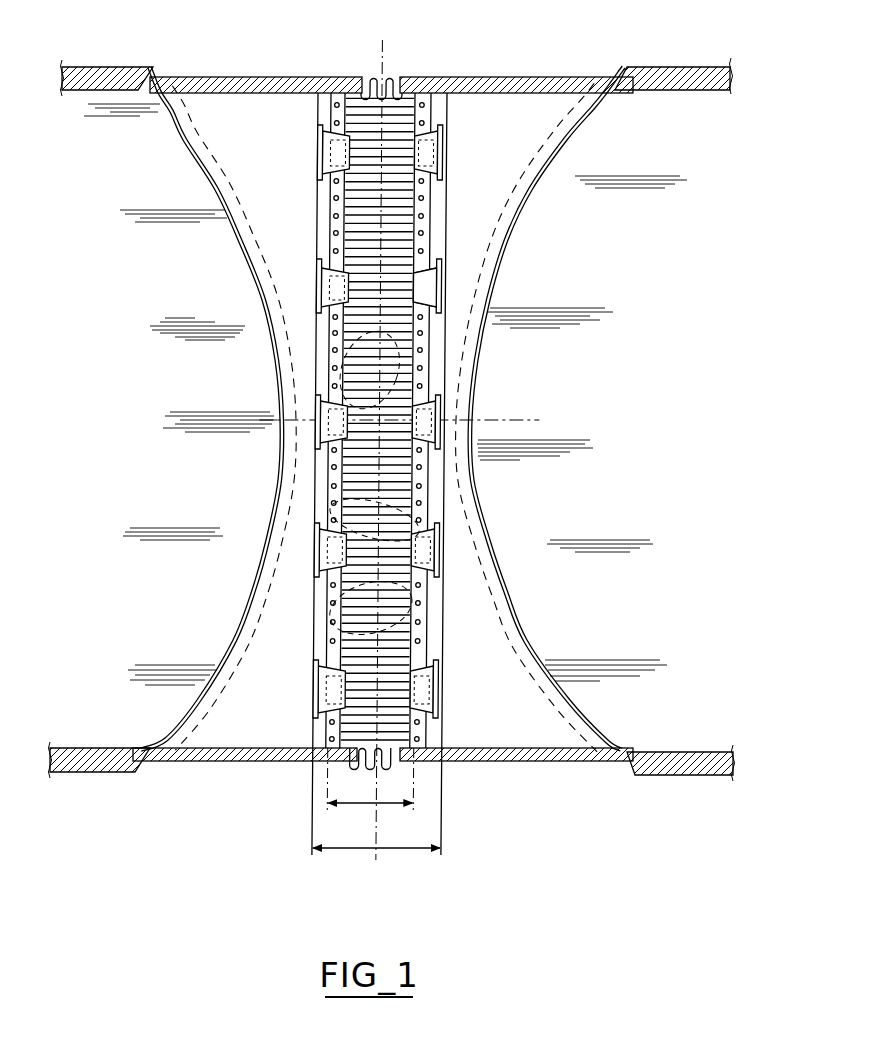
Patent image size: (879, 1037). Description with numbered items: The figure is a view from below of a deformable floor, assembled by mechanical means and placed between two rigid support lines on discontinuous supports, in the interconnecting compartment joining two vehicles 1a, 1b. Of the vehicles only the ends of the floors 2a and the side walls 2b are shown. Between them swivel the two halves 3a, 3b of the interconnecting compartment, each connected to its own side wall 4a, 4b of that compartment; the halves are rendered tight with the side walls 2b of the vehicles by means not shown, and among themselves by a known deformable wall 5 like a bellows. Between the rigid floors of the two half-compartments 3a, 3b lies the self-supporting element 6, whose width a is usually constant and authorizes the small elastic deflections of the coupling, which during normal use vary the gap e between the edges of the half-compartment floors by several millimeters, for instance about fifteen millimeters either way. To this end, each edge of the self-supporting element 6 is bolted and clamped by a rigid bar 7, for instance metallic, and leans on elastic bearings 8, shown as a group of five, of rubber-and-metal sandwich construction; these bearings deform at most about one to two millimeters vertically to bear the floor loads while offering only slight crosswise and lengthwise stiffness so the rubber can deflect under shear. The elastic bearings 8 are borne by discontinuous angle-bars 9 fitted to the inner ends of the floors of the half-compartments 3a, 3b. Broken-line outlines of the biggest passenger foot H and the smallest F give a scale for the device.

The vehicle 1a is at (133, 108).
The vehicle 1b is at (657, 128).
The ends of the floors 2a is at (198, 160).
The side walls 2b is at (104, 65).
The half of interconnecting compartment 3a is at (250, 103).
The half of interconnecting compartment 3b is at (515, 113).
The side wall of interconnecting compartment 4a is at (228, 761).
The side wall of interconnecting compartment 4b is at (563, 762).
The deformable wall 5 is at (393, 70).
The self-supporting element 6 is at (360, 697).
The rigid bar 7 is at (427, 344).
The elastic bearing 8 is at (430, 278).
The angle-bar 9 is at (418, 660).
The smallest passenger foot outline F is at (372, 348).
The biggest passenger foot outline H is at (363, 513).
The width of self-supporting element a is at (370, 779).
The gap e is at (376, 832).